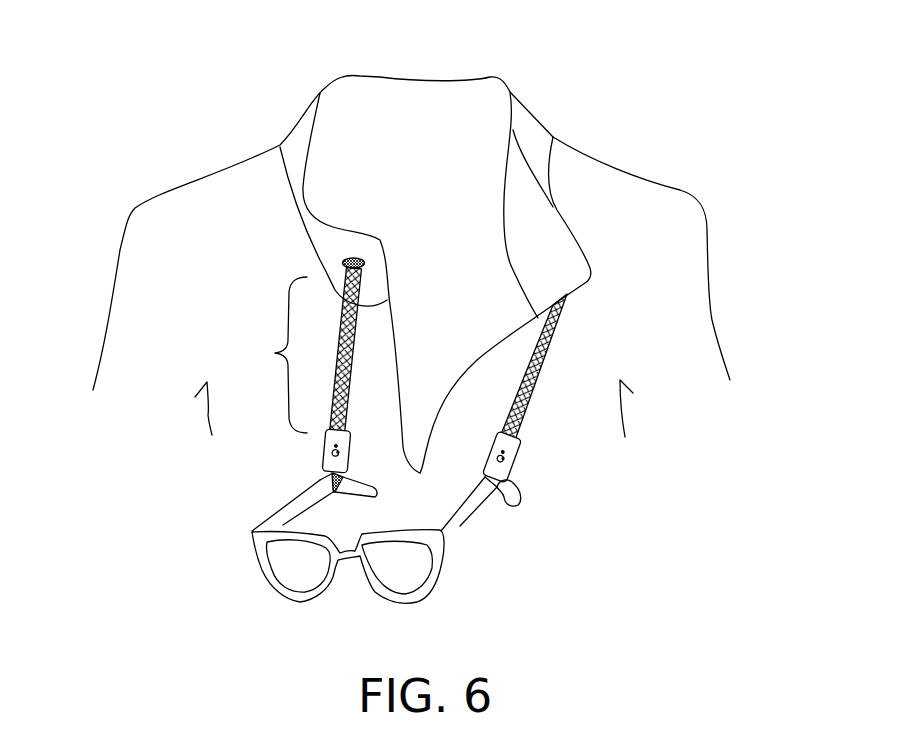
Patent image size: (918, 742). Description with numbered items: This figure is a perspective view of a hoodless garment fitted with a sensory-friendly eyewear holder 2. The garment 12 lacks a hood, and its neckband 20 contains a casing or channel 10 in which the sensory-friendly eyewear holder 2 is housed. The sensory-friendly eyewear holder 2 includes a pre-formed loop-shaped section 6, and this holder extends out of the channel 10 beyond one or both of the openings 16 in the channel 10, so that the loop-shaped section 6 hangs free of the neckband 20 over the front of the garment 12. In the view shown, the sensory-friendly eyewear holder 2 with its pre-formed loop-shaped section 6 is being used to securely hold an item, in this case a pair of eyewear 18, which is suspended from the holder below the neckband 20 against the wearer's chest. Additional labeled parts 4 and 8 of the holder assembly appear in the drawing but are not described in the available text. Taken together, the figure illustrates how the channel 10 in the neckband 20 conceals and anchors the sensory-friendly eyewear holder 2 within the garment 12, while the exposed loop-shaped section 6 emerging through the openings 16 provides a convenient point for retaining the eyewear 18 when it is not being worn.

The sensory-friendly eyewear holder 2 is at (349, 365).
The strap 4 is at (545, 317).
The pre-formed loop-shaped section 6 is at (500, 497).
The connector clip 8 is at (525, 457).
The casing or channel 10 is at (540, 133).
The garment 12 is at (675, 218).
The openings 16 is at (360, 270).
The eyewear 18 is at (394, 567).
The neckband 20 is at (287, 153).